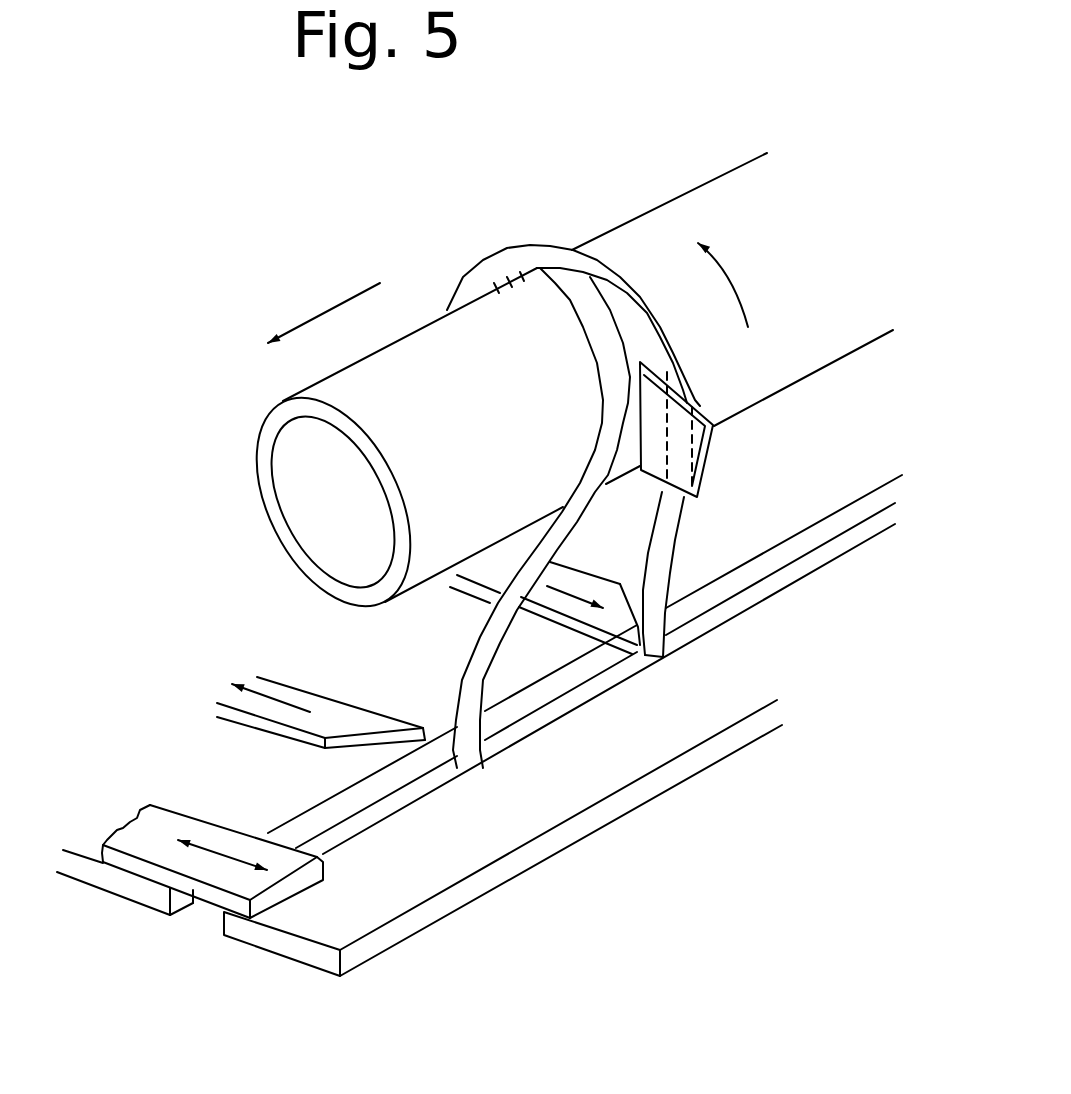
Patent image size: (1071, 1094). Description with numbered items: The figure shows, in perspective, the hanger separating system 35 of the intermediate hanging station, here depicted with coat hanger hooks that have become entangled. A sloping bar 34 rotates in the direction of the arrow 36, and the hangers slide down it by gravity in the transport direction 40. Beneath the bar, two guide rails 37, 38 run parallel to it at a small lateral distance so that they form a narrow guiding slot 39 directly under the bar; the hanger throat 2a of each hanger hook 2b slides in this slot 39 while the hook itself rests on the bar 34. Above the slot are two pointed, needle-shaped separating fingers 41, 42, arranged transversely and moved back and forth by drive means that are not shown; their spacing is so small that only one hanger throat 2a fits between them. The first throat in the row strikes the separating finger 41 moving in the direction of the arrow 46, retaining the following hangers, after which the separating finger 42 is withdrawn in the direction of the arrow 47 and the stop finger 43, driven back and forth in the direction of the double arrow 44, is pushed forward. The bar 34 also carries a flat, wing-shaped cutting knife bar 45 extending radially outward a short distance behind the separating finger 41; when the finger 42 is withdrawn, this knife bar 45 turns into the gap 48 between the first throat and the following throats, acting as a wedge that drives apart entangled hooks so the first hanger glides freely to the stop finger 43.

The sloping bar 34 is at (757, 185).
The hanger throat 2a is at (478, 647).
The hanger hook 2b is at (536, 252).
The hanger separating system 35 is at (360, 1000).
The arrow 36 is at (746, 272).
The guide rail 37 is at (112, 883).
The guide rail 38 is at (477, 888).
The guiding slot 39 is at (794, 548).
The transport direction 40 is at (310, 321).
The separating finger 41 is at (628, 635).
The separating finger 42 is at (408, 680).
The stop finger 43 is at (152, 832).
The double arrow 44 is at (223, 856).
The cutting knife bar 45 is at (693, 452).
The arrow 46 is at (576, 596).
The arrow 47 is at (280, 702).
The gap 48 is at (614, 312).